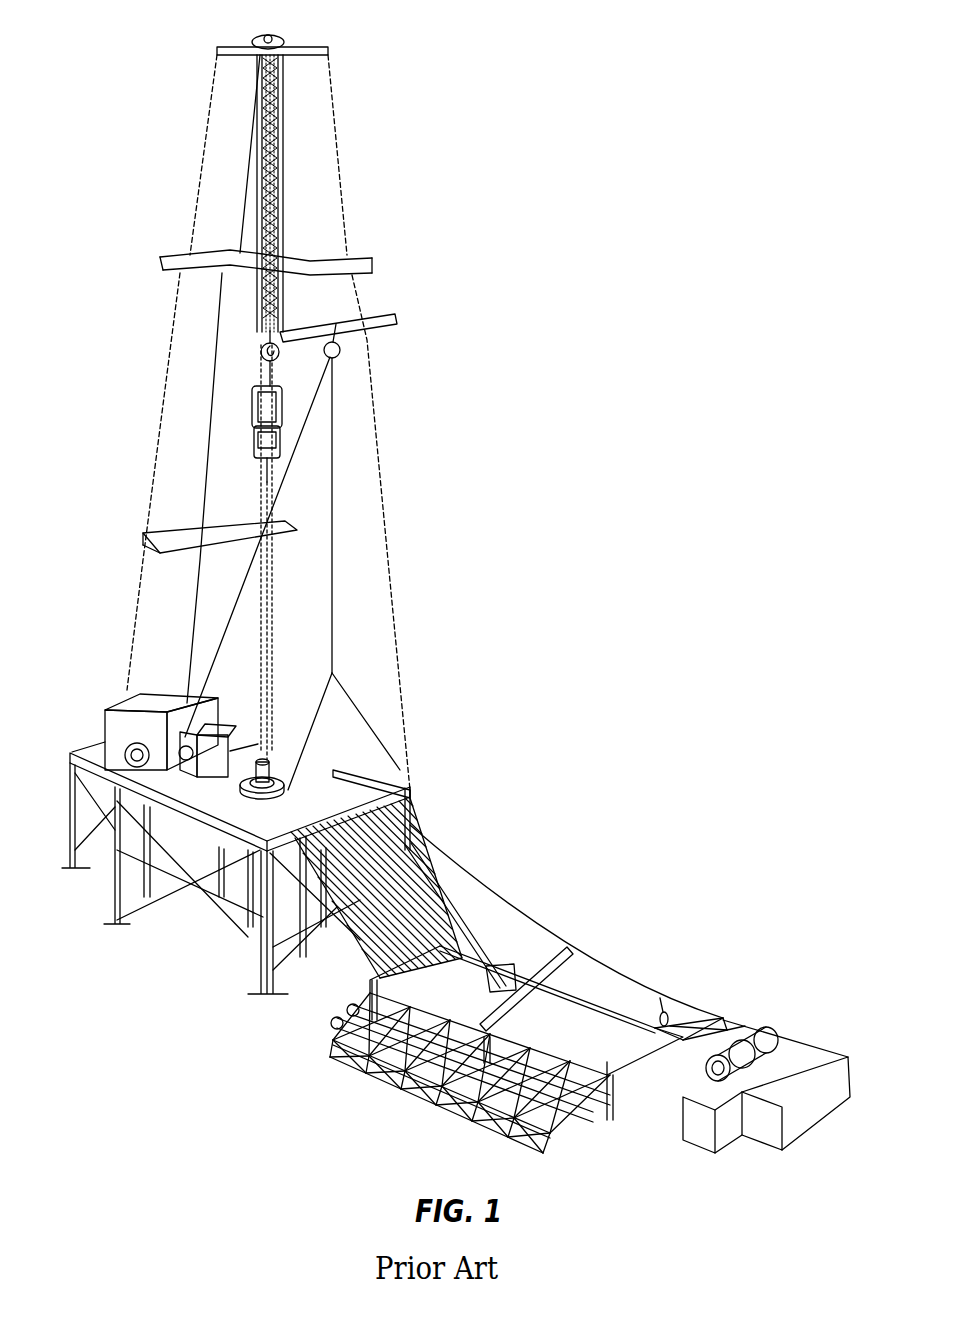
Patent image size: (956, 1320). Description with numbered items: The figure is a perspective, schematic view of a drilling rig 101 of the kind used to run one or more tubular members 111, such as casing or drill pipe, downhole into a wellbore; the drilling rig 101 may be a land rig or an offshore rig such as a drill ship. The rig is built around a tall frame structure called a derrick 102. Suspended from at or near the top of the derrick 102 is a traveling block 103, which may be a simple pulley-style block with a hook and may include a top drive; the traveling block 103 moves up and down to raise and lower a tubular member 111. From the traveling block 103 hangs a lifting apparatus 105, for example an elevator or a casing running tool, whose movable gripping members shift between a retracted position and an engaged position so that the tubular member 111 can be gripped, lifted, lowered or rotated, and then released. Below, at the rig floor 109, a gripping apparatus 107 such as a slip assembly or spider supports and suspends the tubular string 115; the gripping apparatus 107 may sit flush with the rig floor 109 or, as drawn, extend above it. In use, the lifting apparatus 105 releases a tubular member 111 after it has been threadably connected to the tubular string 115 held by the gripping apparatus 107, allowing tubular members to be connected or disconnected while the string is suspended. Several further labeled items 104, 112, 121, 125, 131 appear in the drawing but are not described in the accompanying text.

The drilling rig 101 is at (517, 533).
The derrick 102 is at (370, 395).
The traveling block 103 is at (264, 363).
The traveling block 104 is at (252, 400).
The lifting apparatus 105 is at (253, 440).
The gripping apparatus 107 is at (284, 758).
The rig floor 109 is at (383, 780).
The tubular member 111 is at (452, 908).
The catwalk base 112 is at (410, 1097).
The tubular string 115 is at (245, 792).
The hoisting line 121 is at (373, 730).
The tubular 125 is at (423, 863).
The pipe skate 131 is at (577, 950).